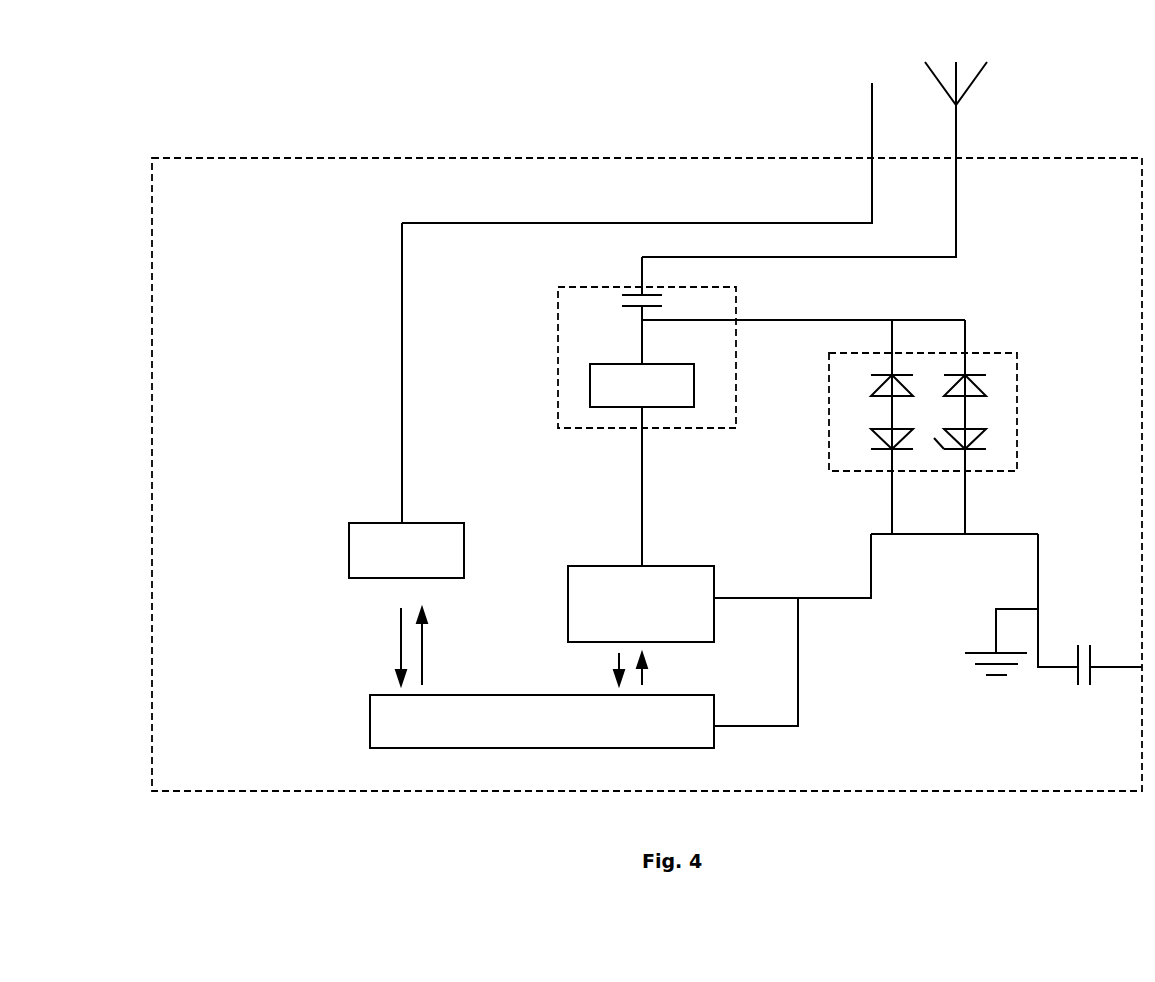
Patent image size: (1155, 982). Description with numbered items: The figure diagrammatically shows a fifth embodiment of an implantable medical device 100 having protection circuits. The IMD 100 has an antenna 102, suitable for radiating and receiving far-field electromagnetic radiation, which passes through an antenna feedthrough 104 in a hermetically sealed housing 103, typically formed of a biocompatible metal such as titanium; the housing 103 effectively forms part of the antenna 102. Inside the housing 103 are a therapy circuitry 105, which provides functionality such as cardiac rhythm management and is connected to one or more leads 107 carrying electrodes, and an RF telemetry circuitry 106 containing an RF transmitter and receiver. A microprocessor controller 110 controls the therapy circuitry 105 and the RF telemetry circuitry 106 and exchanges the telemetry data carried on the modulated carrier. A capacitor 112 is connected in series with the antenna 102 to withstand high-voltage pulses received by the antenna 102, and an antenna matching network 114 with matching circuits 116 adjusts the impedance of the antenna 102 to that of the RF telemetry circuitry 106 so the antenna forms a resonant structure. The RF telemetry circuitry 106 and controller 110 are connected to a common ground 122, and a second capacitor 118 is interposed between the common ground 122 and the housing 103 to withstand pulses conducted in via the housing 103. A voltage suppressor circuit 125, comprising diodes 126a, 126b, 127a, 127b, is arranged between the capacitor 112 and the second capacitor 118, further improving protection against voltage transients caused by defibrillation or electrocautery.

The implantable medical device 100 is at (676, 97).
The antenna 102 is at (957, 108).
The hermetically sealed housing 103 is at (298, 158).
The antenna feedthrough 104 is at (948, 160).
The therapy circuitry 105 is at (349, 545).
The RF telemetry circuitry 106 is at (567, 600).
The leads 107 is at (402, 367).
The microprocessor controller 110 is at (370, 720).
The capacitor 112 is at (650, 295).
The antenna matching network 114 is at (558, 362).
The matching circuits 116 is at (590, 404).
The second capacitor 118 is at (1090, 680).
The common ground 122 is at (968, 653).
The voltage suppressor circuit 125 is at (840, 472).
The diode 126a is at (868, 378).
The diode 126b is at (870, 433).
The diode 127a is at (967, 375).
The diode 127b is at (985, 437).